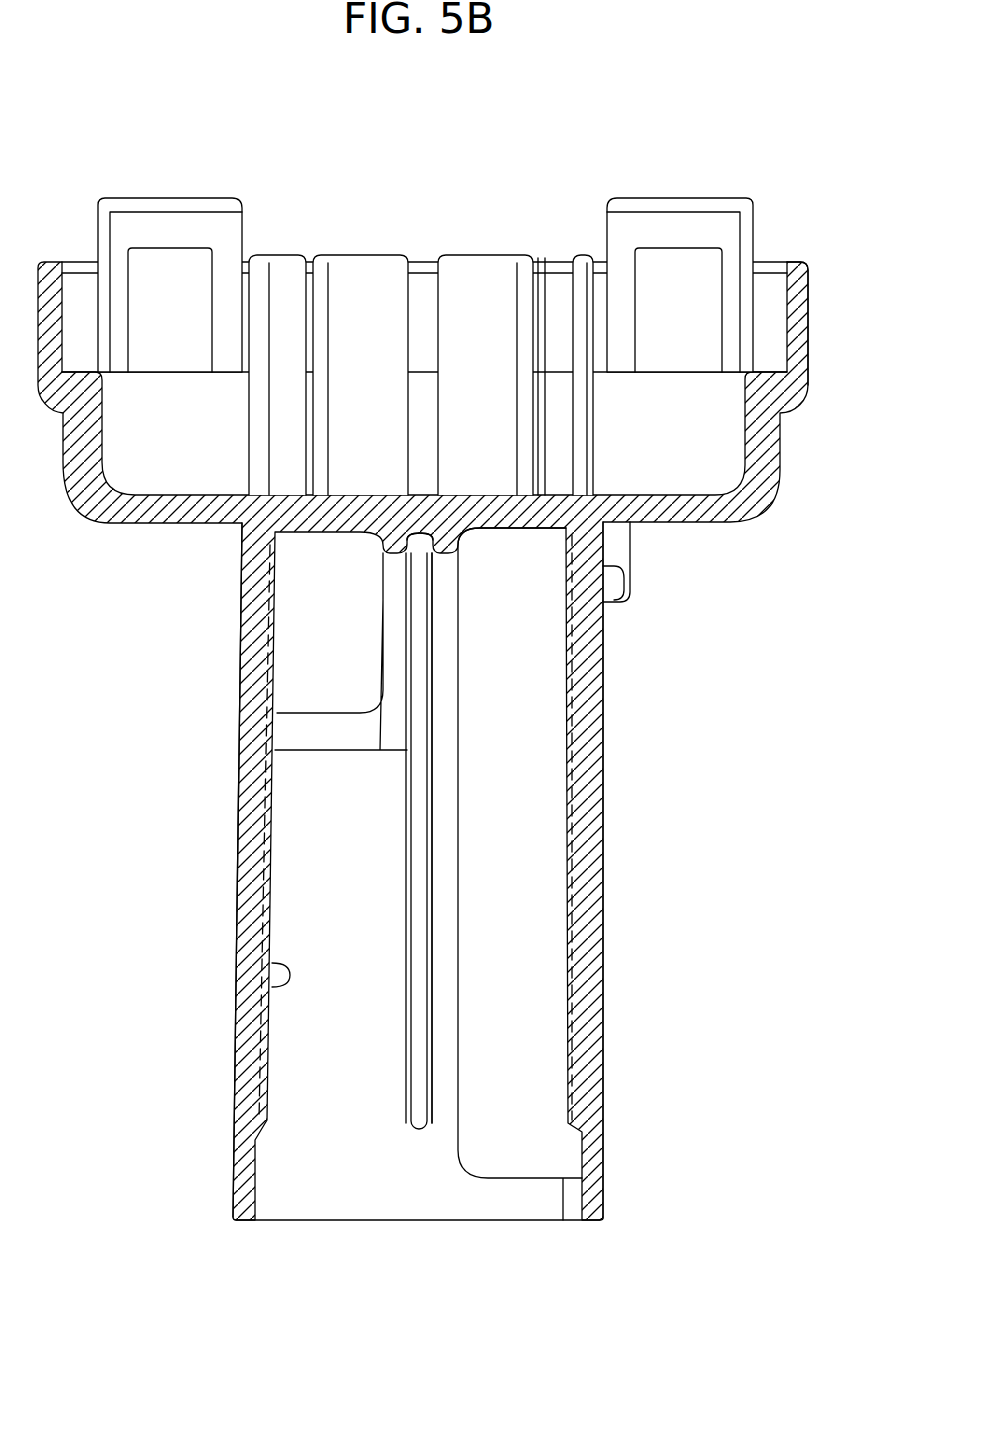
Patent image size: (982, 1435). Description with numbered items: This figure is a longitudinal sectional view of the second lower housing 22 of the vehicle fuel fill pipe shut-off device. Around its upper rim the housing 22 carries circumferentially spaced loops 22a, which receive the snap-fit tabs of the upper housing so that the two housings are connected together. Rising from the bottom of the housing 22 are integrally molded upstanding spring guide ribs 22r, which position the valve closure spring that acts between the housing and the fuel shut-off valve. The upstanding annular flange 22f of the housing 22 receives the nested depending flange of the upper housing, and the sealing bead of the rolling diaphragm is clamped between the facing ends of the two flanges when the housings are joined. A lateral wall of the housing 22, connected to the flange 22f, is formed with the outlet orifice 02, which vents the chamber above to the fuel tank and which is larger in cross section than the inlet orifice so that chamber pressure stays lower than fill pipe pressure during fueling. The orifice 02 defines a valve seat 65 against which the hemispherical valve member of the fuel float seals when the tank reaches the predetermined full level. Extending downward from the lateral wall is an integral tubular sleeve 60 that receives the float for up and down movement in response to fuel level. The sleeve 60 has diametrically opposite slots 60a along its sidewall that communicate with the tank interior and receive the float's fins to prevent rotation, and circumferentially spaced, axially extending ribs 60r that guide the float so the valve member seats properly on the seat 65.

The second lower housing 22 is at (670, 614).
The loops 22a is at (173, 205).
The spring guide ribs 22r is at (548, 268).
The upstanding annular flange 22f is at (797, 302).
The valve seat 65 is at (421, 536).
The outlet orifice 02 is at (425, 536).
The tubular sleeve 60 is at (238, 838).
The ribs 60r is at (285, 983).
The slots 60a is at (523, 978).